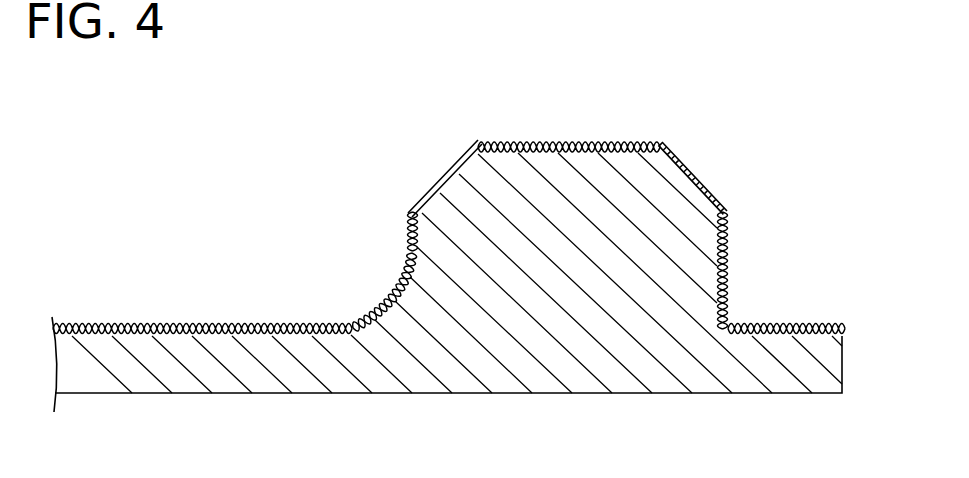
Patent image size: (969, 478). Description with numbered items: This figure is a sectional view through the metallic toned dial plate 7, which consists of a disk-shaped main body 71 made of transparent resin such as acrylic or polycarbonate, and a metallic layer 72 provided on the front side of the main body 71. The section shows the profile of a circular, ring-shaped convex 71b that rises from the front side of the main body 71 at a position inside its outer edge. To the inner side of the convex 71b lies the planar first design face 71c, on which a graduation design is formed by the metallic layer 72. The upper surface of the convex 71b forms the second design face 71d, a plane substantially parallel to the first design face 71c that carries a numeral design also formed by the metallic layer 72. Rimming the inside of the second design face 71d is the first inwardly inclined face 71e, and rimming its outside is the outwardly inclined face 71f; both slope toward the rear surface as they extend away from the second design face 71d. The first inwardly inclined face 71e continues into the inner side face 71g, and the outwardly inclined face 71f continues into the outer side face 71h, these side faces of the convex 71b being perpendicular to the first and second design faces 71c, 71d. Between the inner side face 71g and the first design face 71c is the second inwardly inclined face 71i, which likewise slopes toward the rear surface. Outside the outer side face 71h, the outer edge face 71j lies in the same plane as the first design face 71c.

The metallic toned dial plate 7 is at (683, 137).
The main body 71 is at (793, 395).
The convex 71b is at (582, 230).
The first design face 71c is at (253, 330).
The second design face 71d is at (564, 148).
The first inwardly inclined face 71e is at (442, 181).
The outwardly inclined face 71f is at (677, 161).
The inner side face 71g is at (407, 238).
The outer side face 71h is at (728, 248).
The second inwardly inclined face 71i is at (380, 299).
The outer edge face 71j is at (760, 327).
The metallic layer 72 is at (803, 312).